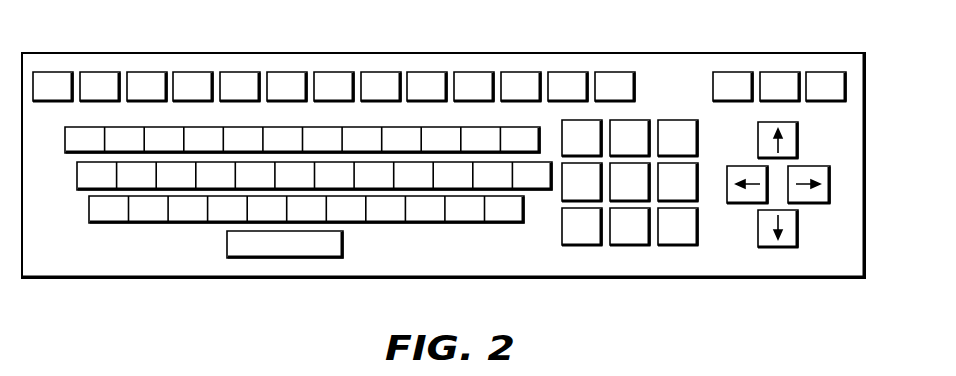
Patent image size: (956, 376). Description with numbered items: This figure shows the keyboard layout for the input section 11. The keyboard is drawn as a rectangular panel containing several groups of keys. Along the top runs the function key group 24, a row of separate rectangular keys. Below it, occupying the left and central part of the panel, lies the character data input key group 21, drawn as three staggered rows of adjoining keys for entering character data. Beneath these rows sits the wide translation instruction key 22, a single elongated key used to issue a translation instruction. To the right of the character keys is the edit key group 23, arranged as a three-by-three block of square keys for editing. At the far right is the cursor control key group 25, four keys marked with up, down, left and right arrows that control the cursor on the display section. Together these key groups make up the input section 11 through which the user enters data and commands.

The input section 11 is at (867, 135).
The character data input key group 21 is at (132, 185).
The translation instruction key 22 is at (273, 250).
The edit key group 23 is at (628, 245).
The function key group 24 is at (522, 77).
The cursor control key group 25 is at (772, 247).